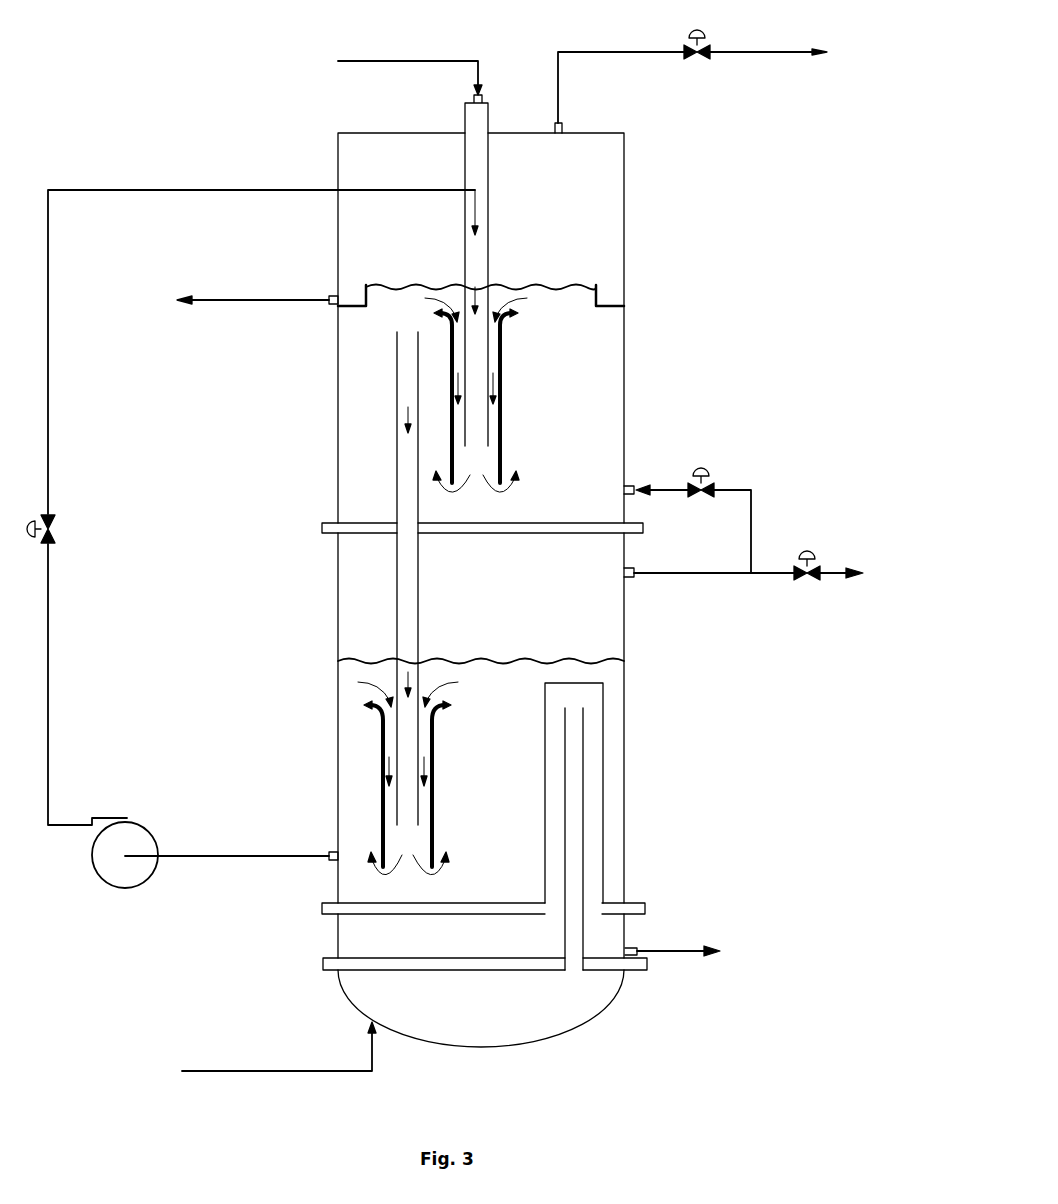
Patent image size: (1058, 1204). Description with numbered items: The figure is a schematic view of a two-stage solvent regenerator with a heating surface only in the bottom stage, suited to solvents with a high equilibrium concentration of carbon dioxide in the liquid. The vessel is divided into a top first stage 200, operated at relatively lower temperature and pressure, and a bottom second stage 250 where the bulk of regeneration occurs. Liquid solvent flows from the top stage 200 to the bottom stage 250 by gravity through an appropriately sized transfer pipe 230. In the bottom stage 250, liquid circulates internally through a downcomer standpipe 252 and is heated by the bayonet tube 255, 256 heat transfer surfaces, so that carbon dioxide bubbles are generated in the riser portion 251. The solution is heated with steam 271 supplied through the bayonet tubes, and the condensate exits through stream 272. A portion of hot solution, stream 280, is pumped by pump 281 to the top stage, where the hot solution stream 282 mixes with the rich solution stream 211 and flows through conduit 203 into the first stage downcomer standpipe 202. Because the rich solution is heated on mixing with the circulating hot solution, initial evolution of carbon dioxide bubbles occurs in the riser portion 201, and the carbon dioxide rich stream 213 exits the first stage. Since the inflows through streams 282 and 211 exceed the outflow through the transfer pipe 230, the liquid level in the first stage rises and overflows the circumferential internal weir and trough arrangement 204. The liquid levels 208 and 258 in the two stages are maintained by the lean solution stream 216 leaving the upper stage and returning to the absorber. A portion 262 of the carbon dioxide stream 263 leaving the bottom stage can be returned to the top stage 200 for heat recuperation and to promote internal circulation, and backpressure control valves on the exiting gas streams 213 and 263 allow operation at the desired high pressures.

The top first stage 200 is at (272, 128).
The riser portion of first stage 201 is at (582, 418).
The first stage downcomer standpipe 202 is at (502, 382).
The conduit 203 is at (488, 245).
The circumferential internal weir and trough arrangement 204 is at (362, 308).
The liquid level 208 is at (569, 282).
The rich solution stream 211 is at (430, 61).
The CO2 rich stream 213 is at (748, 52).
The lean solution stream 216 is at (283, 298).
The transfer pipe 230 is at (398, 603).
The bottom second stage 250 is at (727, 798).
The riser portion of bottom stage 251 is at (360, 775).
The downcomer standpipe 252 is at (380, 742).
The bayonet tube 255 is at (603, 718).
The bayonet tube 256 is at (583, 777).
The liquid level 258 is at (540, 657).
The portion of CO2 stream 262 is at (657, 488).
The CO2 stream 263 is at (833, 571).
The steam 271 is at (272, 1071).
The condensate stream 272 is at (657, 952).
The hot solution stream 280 is at (277, 855).
The pump 281 is at (138, 815).
The hot solution stream 282 is at (227, 190).